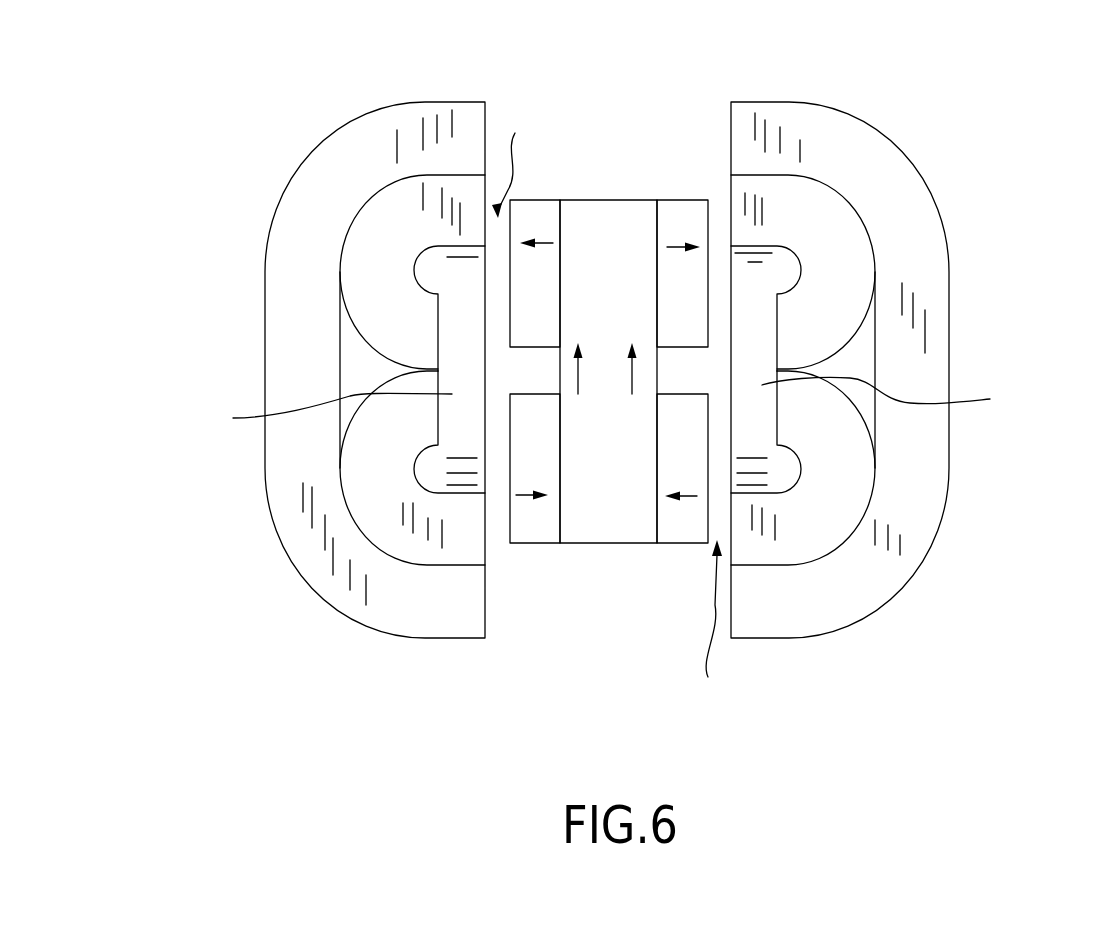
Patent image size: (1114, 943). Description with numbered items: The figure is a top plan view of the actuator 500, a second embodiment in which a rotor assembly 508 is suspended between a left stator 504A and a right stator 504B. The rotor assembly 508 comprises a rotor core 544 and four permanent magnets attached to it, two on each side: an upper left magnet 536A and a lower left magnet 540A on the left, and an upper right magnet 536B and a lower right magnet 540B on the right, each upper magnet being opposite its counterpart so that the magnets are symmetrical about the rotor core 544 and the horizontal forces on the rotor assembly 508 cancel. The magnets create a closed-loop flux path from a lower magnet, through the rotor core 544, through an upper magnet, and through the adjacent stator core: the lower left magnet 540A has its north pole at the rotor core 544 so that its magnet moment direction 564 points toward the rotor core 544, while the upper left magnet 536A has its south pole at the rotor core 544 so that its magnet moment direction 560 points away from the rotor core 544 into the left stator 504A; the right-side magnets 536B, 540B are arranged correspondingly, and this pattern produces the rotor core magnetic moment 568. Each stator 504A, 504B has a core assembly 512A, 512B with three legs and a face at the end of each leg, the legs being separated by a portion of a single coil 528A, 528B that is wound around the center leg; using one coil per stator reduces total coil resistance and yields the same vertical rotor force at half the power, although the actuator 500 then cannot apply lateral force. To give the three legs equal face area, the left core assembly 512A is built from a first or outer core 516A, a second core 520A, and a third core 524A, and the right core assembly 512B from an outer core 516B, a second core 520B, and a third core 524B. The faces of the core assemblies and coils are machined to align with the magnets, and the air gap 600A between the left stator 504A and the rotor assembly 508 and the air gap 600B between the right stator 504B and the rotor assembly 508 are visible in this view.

The actuator 500 is at (948, 72).
The left stator 504A is at (412, 673).
The right stator 504B is at (805, 672).
The rotor assembly 508 is at (600, 592).
The left stator core assembly 512A is at (231, 363).
The right stator core assembly 512B is at (985, 305).
The first or outer core 516A is at (345, 207).
The first or outer core 516B is at (917, 207).
The second core 520A is at (407, 274).
The second core 520B is at (847, 246).
The third core 524A is at (407, 456).
The third core 524B is at (837, 436).
The coil 528A is at (316, 412).
The coil 528B is at (903, 394).
The upper left magnet 536A is at (538, 215).
The upper right magnet 536B is at (687, 215).
The lower left magnet 540A is at (530, 523).
The lower right magnet 540B is at (690, 532).
The rotor core 544 is at (630, 215).
The magnet moment direction 560 is at (540, 241).
The magnet moment direction 564 is at (677, 502).
The rotor core magnetic moment 568 is at (560, 380).
The air gap 600A is at (516, 161).
The air gap 600B is at (698, 624).